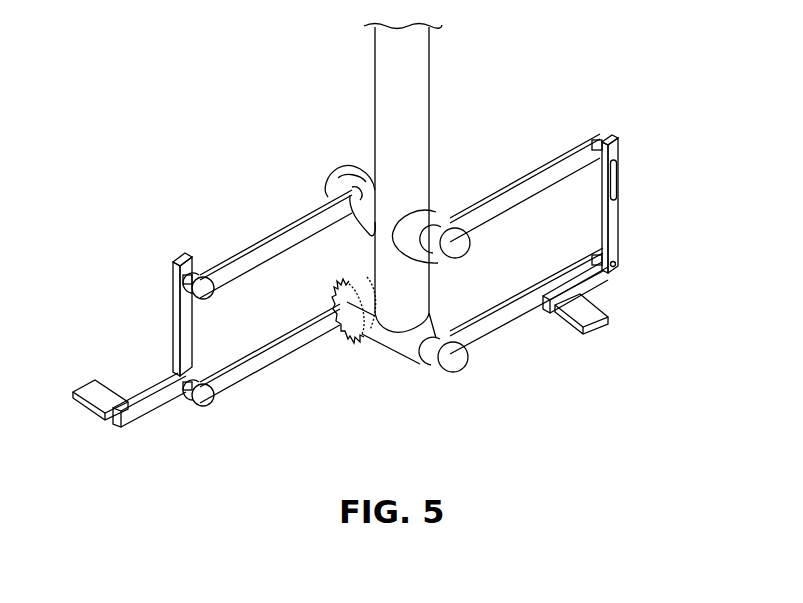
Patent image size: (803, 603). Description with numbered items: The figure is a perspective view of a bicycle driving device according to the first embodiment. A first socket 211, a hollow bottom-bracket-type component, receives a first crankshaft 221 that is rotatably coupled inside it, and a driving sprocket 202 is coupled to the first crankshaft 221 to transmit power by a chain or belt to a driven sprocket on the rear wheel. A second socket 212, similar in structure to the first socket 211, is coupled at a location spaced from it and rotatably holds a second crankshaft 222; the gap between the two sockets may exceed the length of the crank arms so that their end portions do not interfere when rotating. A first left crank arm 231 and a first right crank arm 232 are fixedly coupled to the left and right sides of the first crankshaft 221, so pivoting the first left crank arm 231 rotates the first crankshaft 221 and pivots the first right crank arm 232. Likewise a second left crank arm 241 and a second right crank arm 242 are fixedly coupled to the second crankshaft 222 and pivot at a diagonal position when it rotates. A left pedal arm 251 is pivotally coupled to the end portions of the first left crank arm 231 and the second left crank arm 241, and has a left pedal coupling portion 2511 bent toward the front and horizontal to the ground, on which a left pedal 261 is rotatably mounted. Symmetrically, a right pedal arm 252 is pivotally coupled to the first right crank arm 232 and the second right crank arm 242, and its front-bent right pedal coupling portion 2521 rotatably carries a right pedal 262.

The driving sprocket 202 is at (342, 337).
The first socket 211 is at (386, 340).
The second socket 212 is at (372, 190).
The first crankshaft 221 is at (421, 352).
The second crankshaft 222 is at (435, 215).
The first left crank arm 231 is at (493, 324).
The first right crank arm 232 is at (246, 378).
The second left crank arm 241 is at (534, 175).
The second right crank arm 242 is at (260, 235).
The left pedal arm 251 is at (632, 213).
The left pedal coupling portion 2511 is at (600, 284).
The right pedal arm 252 is at (160, 292).
The right pedal coupling portion 2521 is at (143, 410).
The left pedal 261 is at (582, 330).
The right pedal 262 is at (88, 390).